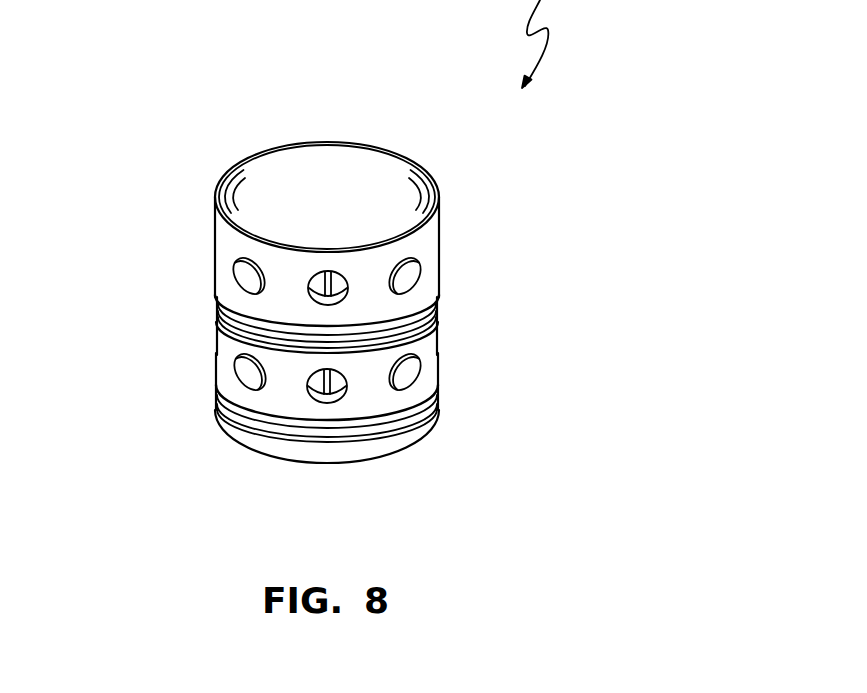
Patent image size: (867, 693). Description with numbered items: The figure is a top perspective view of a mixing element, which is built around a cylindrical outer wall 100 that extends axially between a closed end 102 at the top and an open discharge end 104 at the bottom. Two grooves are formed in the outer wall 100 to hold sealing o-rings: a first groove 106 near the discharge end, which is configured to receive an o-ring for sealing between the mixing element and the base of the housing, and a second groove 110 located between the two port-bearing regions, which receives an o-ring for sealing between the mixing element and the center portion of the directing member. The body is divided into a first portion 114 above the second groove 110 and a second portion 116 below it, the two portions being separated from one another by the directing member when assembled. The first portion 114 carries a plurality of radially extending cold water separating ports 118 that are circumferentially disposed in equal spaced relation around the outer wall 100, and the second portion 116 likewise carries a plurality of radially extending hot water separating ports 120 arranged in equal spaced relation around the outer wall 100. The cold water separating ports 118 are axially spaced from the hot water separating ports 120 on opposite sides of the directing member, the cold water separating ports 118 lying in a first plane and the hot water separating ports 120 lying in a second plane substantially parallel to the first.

The cylindrical outer wall 100 is at (327, 297).
The closed end 102 is at (268, 187).
The open discharge end 104 is at (313, 446).
The first groove 106 is at (438, 397).
The second groove 110 is at (438, 307).
The first portion 114 is at (215, 222).
The second portion 116 is at (217, 360).
The cold water separating ports 118 is at (409, 259).
The hot water separating ports 120 is at (403, 392).